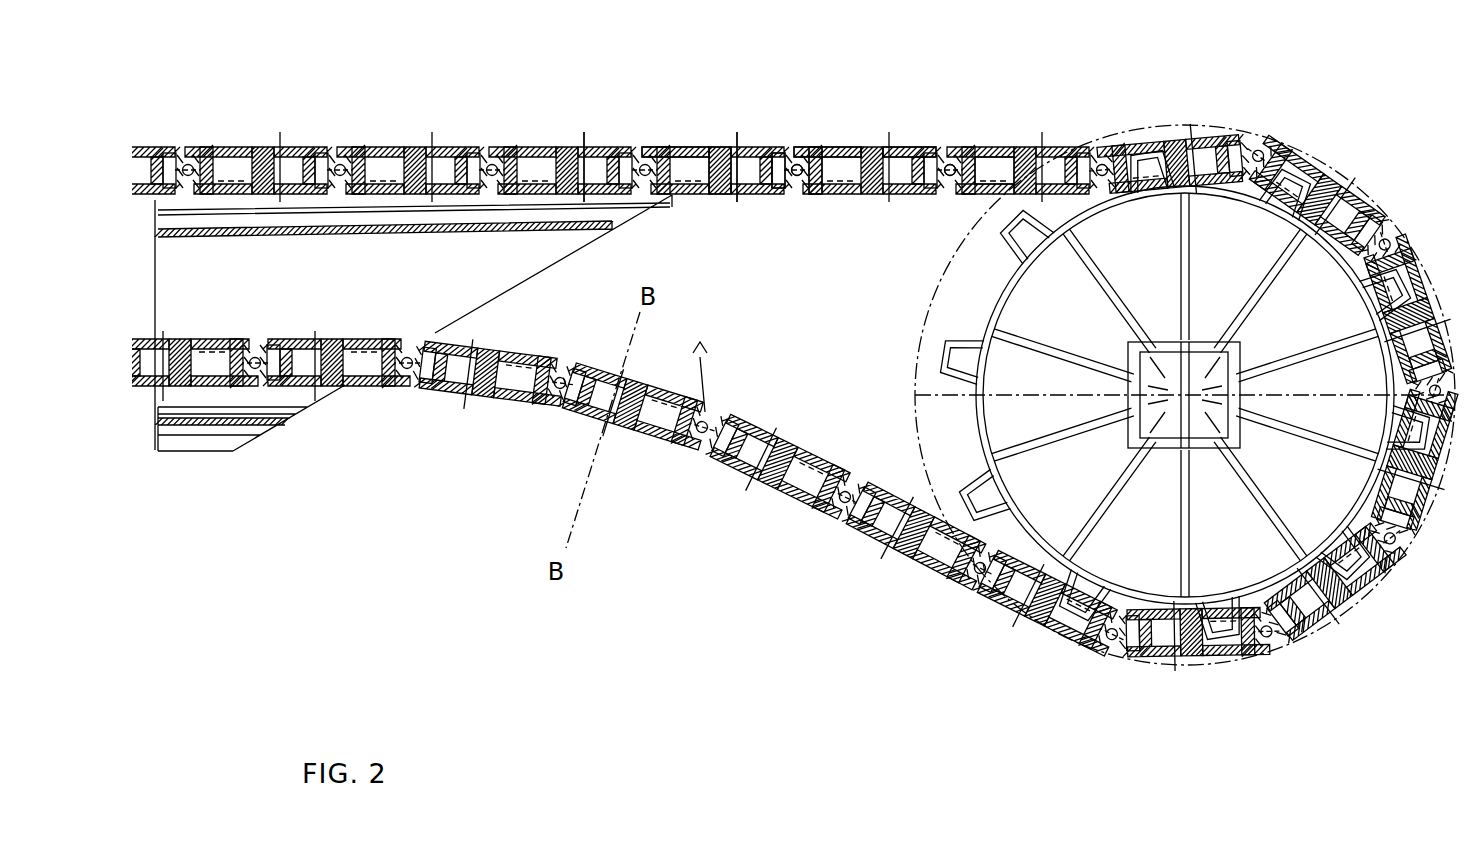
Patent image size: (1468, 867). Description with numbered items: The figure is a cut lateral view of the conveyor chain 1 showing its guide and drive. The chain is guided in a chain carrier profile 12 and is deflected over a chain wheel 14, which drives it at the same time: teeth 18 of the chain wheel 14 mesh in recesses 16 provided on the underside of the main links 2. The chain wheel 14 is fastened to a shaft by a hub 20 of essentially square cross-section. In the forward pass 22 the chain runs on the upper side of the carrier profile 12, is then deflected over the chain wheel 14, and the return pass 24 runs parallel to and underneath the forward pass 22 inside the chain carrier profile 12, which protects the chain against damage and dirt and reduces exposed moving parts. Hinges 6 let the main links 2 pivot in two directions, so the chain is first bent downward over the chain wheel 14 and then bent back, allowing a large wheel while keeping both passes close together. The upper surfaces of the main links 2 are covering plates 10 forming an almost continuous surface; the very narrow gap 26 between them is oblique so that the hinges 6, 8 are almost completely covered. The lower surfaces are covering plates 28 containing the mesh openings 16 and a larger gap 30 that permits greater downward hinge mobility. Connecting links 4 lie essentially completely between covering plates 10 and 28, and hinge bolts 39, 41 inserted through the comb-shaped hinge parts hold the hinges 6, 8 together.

The conveyor chain 1 is at (380, 145).
The main link 2 is at (847, 147).
The connecting link 4 is at (897, 140).
The hinge 6 is at (790, 150).
The hinge 8 is at (736, 132).
The covering plate 10 is at (678, 143).
The chain carrier profile 12 is at (192, 420).
The chain wheel 14 is at (1305, 490).
The recess 16 is at (996, 165).
The tooth 18 is at (1245, 657).
The hub 20 is at (1176, 435).
The forward pass 22 is at (566, 110).
The return pass 24 is at (385, 400).
The narrow gap 26 is at (801, 146).
The covering plate 28 is at (716, 192).
The larger gap 30 is at (792, 184).
The hinge bolt 39 is at (585, 180).
The hinge bolt 41 is at (951, 145).